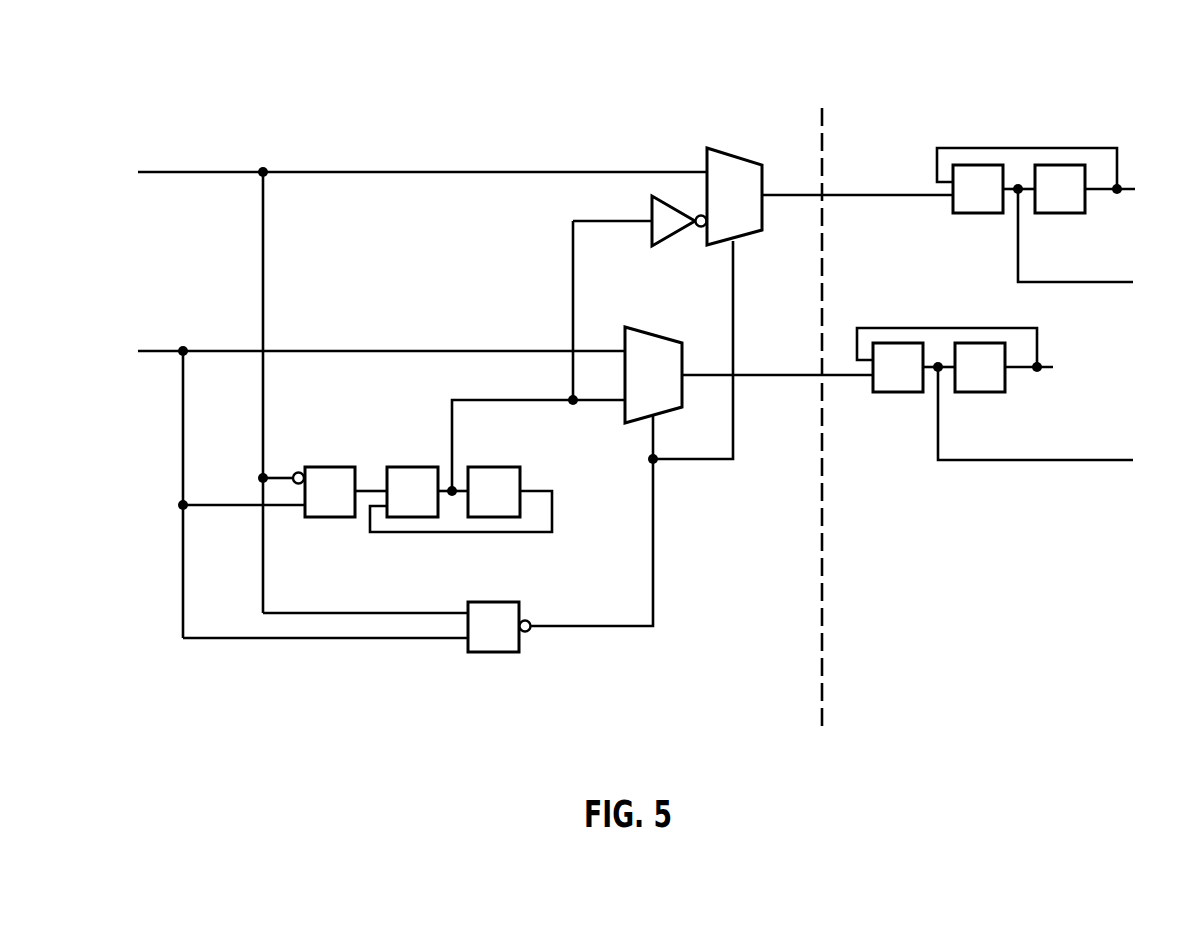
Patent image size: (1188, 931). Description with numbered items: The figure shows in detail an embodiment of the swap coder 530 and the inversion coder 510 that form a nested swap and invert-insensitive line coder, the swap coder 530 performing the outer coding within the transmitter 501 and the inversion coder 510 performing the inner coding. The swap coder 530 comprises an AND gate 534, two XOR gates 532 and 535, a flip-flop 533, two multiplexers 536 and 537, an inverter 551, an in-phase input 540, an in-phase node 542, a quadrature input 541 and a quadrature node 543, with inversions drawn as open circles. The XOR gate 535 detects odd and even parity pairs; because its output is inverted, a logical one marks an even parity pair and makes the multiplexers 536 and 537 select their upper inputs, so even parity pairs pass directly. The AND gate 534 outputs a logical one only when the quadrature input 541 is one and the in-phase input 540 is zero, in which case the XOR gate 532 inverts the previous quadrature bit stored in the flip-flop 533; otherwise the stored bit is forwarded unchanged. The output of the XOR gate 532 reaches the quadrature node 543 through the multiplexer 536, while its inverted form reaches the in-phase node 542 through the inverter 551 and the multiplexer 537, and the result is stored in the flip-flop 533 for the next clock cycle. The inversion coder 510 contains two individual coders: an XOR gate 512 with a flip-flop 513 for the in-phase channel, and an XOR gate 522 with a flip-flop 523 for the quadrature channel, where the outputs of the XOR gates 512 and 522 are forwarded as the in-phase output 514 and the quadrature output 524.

The transmitter 501 is at (242, 694).
The inversion coder 510 is at (915, 583).
The XOR gate 512 is at (975, 215).
The flip-flop 513 is at (1058, 215).
The in-phase output 514 is at (1113, 285).
The XOR gate 522 is at (897, 394).
The flip-flop 523 is at (978, 394).
The quadrature output 524 is at (1113, 463).
The swap coder 530 is at (720, 672).
The XOR gate 532 is at (410, 466).
The flip-flop 533 is at (492, 466).
The AND gate 534 is at (328, 466).
The XOR gate 535 is at (492, 600).
The multiplexer 536 is at (668, 339).
The multiplexer 537 is at (750, 236).
The in-phase input 540 is at (150, 175).
The quadrature input 541 is at (150, 354).
The in-phase node 542 is at (785, 194).
The quadrature node 543 is at (768, 378).
The inverter 551 is at (672, 237).